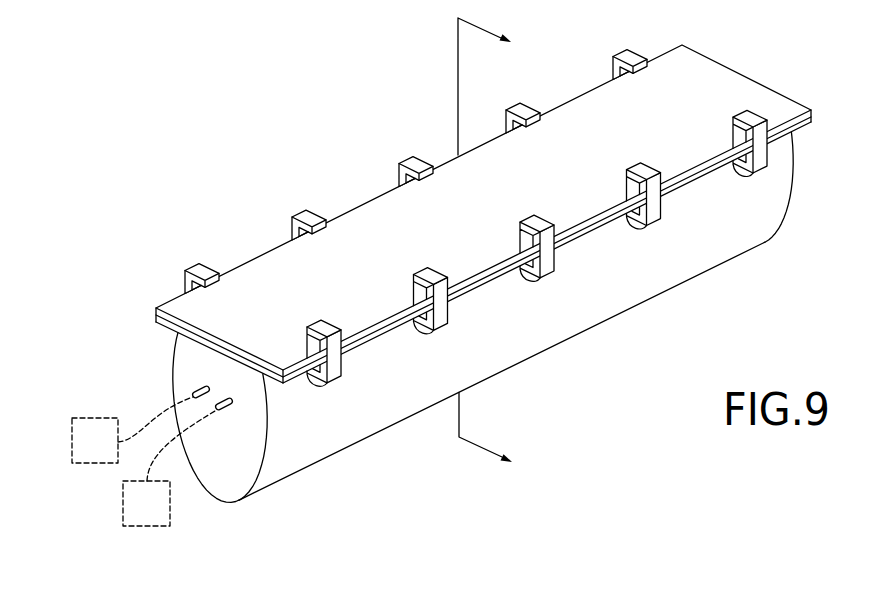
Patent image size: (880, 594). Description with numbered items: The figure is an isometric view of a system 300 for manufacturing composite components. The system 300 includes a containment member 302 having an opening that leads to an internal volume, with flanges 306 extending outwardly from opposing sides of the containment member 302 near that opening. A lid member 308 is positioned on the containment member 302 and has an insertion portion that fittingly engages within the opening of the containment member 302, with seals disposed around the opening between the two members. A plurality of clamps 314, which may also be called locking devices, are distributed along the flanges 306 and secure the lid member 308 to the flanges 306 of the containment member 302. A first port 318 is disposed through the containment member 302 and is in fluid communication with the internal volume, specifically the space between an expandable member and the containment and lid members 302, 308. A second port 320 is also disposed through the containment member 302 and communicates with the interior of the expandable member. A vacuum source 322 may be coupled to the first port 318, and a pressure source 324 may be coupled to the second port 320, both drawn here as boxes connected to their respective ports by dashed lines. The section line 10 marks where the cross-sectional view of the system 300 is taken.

The system 300 is at (224, 73).
The containment member 302 is at (546, 350).
The flanges 306 is at (156, 324).
The lid member 308 is at (725, 85).
The clamps 314 is at (396, 166).
The first port 318 is at (195, 392).
The second port 320 is at (230, 408).
The vacuum source 322 is at (95, 417).
The pressure source 324 is at (123, 502).
The line 10— 10 is at (502, 250).